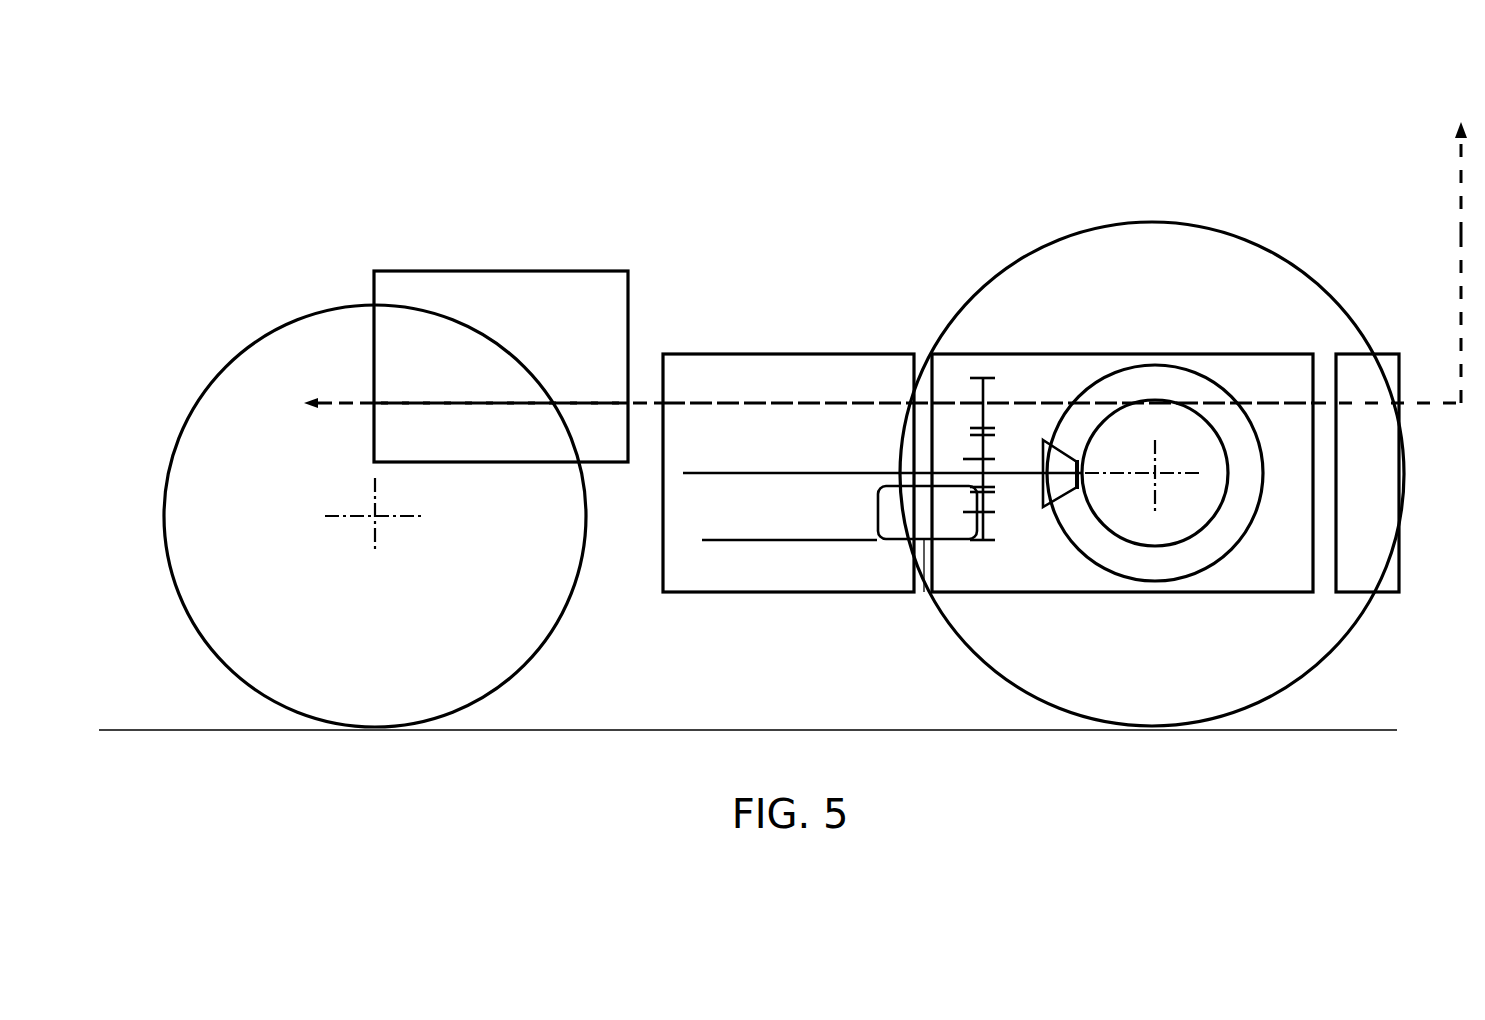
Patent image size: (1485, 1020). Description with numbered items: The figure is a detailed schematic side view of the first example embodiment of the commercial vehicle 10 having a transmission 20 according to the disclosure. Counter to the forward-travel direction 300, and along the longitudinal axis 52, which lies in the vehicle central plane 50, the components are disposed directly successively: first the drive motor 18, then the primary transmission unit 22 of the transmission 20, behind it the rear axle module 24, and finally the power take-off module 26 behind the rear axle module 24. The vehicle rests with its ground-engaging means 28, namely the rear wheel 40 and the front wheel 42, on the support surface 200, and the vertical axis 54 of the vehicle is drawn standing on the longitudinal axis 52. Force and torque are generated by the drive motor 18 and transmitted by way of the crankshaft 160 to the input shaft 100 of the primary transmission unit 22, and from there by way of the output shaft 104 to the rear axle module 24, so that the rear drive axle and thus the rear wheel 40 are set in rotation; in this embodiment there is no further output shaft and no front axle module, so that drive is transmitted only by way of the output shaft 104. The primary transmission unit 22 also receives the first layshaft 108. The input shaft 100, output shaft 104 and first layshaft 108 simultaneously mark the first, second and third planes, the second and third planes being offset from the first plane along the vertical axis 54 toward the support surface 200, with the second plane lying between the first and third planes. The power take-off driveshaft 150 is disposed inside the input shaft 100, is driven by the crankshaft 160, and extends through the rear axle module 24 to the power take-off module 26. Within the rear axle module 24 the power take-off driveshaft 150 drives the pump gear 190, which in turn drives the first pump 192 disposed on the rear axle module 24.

The commercial vehicle 10 is at (600, 112).
The forward-travel direction 300 is at (1002, 125).
The transmission 20 is at (852, 189).
The drive motor 18 is at (393, 270).
The crankshaft 160 is at (519, 403).
The longitudinal axis 52 is at (300, 390).
The ground-engaging means 28 is at (784, 449).
The front wheel 42 is at (555, 630).
The rear wheel 40 is at (1218, 225).
The support surface 200 is at (565, 729).
The primary transmission unit 22 is at (850, 355).
The output shaft 104 is at (709, 473).
The first layshaft 108 is at (775, 540).
The input shaft 100 is at (988, 335).
The power take-off driveshaft 150 is at (792, 403).
The rear axle module 24 is at (1008, 355).
The power take-off module 26 is at (1395, 477).
The vehicle central plane 50 is at (1430, 402).
The vertical axis 54 is at (1461, 160).
The pump gear 190 is at (1013, 554).
The first pump 192 is at (924, 592).